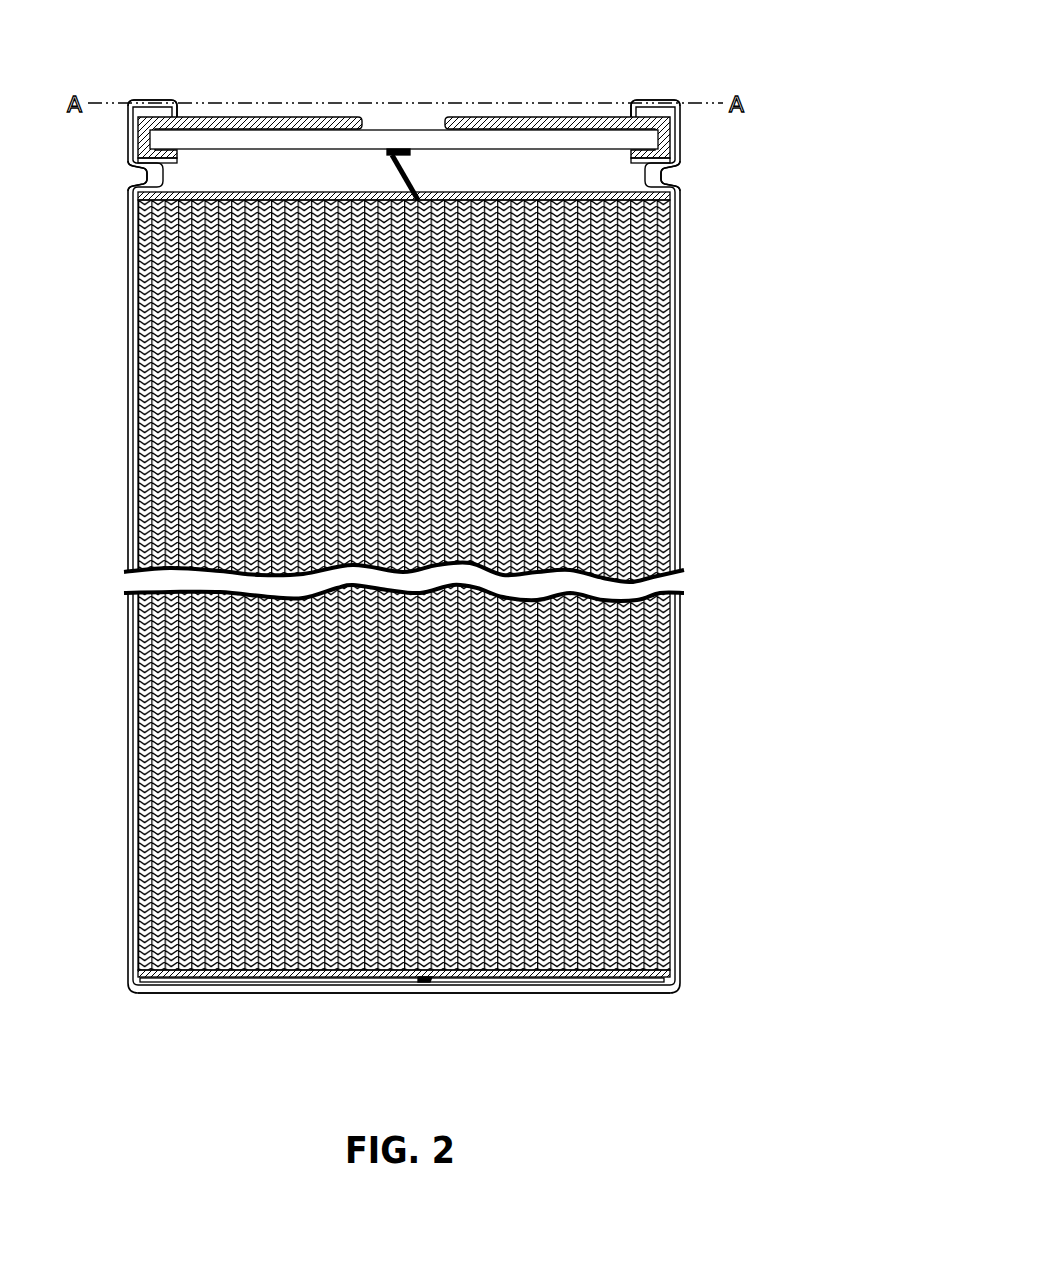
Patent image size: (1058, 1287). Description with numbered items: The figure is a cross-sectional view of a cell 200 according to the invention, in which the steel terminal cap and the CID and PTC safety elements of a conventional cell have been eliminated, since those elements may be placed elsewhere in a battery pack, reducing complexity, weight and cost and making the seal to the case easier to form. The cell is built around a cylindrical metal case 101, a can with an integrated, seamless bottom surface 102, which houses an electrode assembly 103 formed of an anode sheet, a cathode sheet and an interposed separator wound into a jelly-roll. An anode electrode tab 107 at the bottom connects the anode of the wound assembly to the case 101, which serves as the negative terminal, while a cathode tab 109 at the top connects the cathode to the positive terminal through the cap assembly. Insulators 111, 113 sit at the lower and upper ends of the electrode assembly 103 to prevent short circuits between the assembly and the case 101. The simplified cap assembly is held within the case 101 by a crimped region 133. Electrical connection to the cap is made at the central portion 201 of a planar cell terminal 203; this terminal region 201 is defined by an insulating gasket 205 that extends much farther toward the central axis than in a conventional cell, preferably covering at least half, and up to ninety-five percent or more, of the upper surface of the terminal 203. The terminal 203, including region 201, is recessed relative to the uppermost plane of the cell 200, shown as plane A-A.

The case 101 is at (680, 520).
The bottom surface 102 is at (272, 1001).
The electrode assembly 103 is at (424, 482).
The anode electrode tab 107 is at (430, 982).
The cathode tab 109 is at (402, 177).
The insulator 111 is at (613, 982).
The insulator 113 is at (165, 200).
The crimped region 133 is at (689, 170).
The cell 200 is at (819, 149).
The central portion of cell terminal 201 is at (417, 111).
The cell terminal 203 is at (420, 138).
The insulating gasket 205 is at (548, 117).